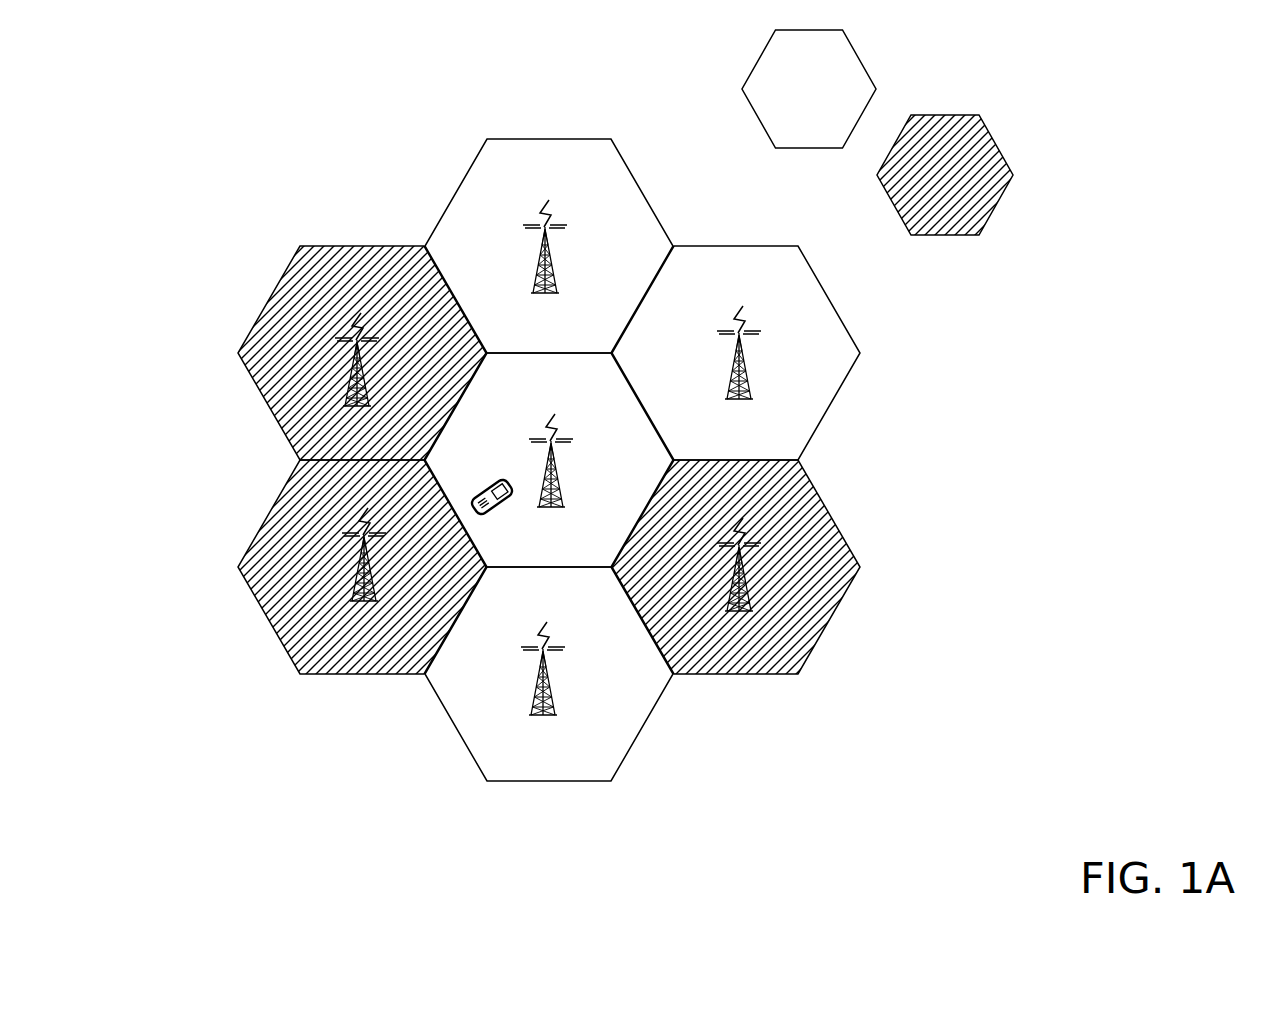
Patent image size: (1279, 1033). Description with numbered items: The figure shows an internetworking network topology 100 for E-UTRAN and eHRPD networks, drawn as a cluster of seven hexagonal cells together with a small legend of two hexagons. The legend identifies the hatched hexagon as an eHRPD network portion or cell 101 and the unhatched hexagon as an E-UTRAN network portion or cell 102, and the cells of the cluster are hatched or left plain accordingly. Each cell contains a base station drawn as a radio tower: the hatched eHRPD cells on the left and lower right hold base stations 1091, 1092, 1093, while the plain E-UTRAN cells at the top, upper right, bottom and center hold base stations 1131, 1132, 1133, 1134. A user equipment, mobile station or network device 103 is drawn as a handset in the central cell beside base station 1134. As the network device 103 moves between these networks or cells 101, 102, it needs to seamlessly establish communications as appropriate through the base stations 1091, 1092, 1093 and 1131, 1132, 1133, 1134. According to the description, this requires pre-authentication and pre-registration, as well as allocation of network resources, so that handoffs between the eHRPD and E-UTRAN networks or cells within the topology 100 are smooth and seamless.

The topology 100 is at (247, 113).
The eHRPD network portion or cell 101 is at (1010, 150).
The E-UTRAN network portion or cell 102 is at (866, 61).
The user equipment, mobile station or network device 103 is at (477, 484).
The base station 1091 is at (749, 577).
The base station 1092 is at (349, 380).
The base station 1093 is at (352, 575).
The base station 1131 is at (749, 366).
The base station 1132 is at (589, 233).
The base station 1133 is at (559, 693).
The base station 1134 is at (545, 525).